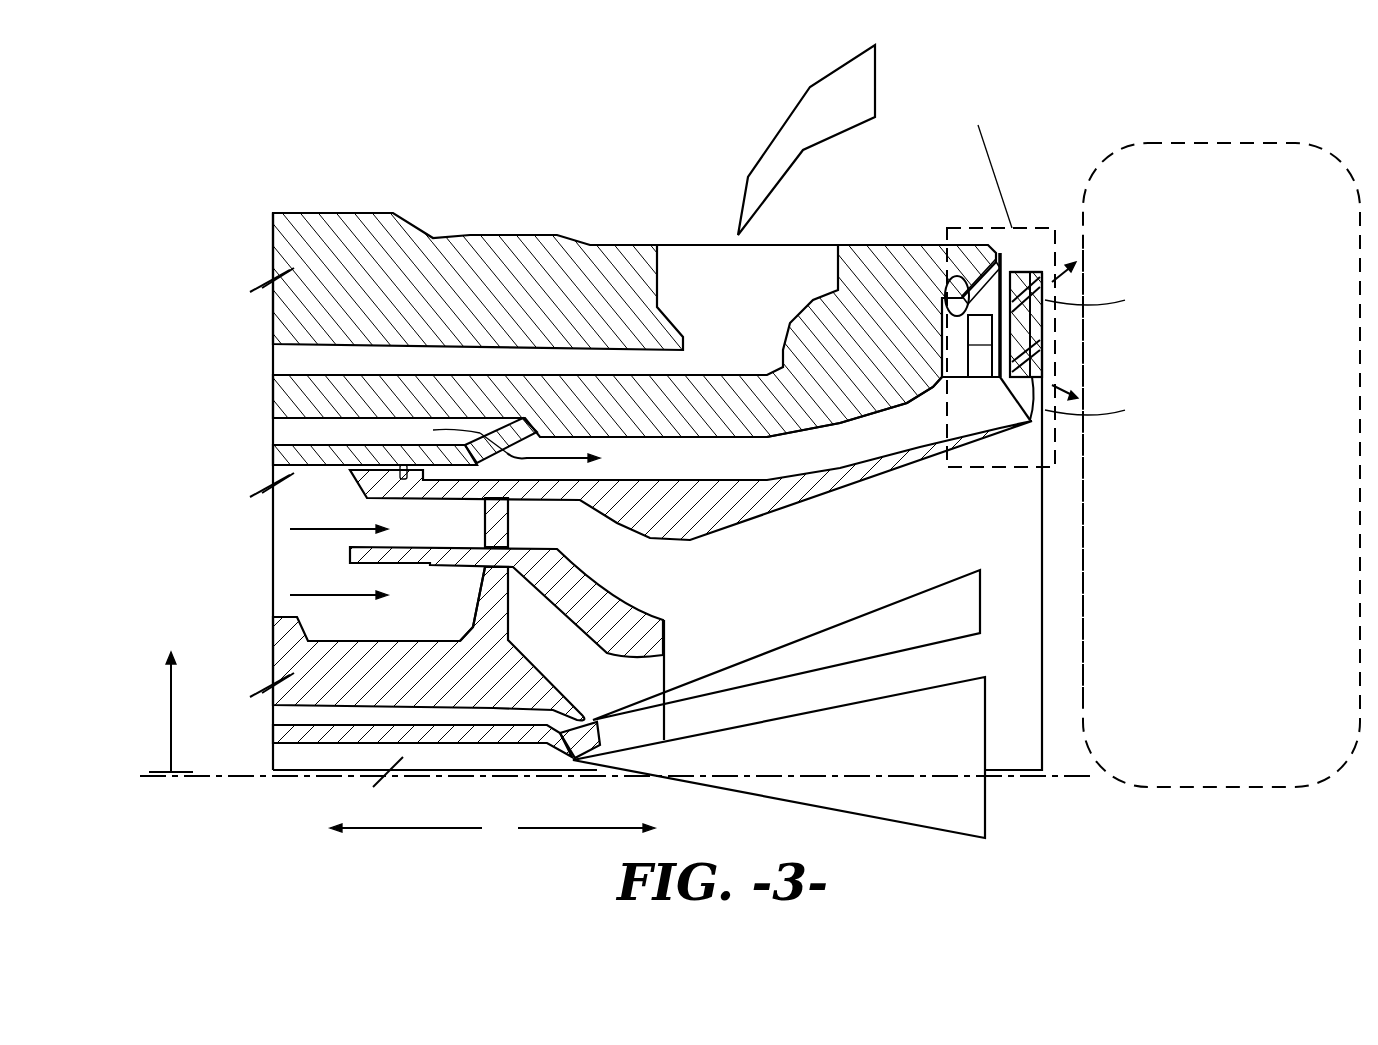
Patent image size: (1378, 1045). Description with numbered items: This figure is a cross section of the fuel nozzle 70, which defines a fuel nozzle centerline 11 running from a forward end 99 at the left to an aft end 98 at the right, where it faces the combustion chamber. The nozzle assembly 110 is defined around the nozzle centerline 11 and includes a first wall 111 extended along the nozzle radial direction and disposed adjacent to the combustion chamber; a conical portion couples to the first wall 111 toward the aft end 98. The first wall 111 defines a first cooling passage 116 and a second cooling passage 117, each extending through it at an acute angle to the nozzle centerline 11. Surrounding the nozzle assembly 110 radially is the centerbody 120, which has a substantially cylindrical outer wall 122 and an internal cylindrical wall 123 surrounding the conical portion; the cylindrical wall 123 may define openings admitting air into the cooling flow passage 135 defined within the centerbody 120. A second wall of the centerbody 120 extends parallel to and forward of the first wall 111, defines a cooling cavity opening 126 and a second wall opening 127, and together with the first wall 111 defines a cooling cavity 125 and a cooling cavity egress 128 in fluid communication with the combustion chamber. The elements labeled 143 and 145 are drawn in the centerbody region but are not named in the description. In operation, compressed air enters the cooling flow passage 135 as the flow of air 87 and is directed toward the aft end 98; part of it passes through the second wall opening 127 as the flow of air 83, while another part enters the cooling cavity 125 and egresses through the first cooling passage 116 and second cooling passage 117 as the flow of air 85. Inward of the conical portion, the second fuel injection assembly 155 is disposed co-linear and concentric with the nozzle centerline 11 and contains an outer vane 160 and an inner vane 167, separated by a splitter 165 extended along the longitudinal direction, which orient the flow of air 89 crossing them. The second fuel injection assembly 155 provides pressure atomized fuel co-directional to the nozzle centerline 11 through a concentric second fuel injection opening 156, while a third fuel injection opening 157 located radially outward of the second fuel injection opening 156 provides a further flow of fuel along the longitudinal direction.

The fuel nozzle 70 is at (560, 157).
The cooling cavity 143 is at (704, 238).
The cooling passage 145 is at (304, 357).
The centerbody 120 is at (910, 246).
The outer wall 122 is at (872, 238).
The internal cylindrical wall 123 is at (822, 405).
The cooling flow passage 135 is at (672, 468).
The flow of air 87 is at (378, 434).
The flow of air 89 is at (334, 528).
The forward end 99 is at (143, 492).
The second fuel injection assembly 155 is at (240, 645).
The outer vane 160 is at (500, 513).
The splitter 165 is at (604, 616).
The inner vane 167 is at (500, 607).
The third fuel injection opening 157 is at (604, 700).
The second fuel injection opening 156 is at (604, 735).
The fuel nozzle centerline 11 is at (1012, 778).
The cooling cavity opening 126 is at (958, 370).
The flow of air 83 is at (933, 280).
The second wall opening 127 is at (968, 258).
The cooling cavity egress 128 is at (1012, 277).
The cooling cavity 125 is at (1005, 262).
The first cooling passage 116 is at (1045, 333).
The nozzle assembly 110 is at (1045, 353).
The first wall 111 is at (1045, 367).
The second cooling passage 117 is at (1045, 430).
The flow of air 85 is at (1045, 290).
The aft end 98 is at (1278, 476).